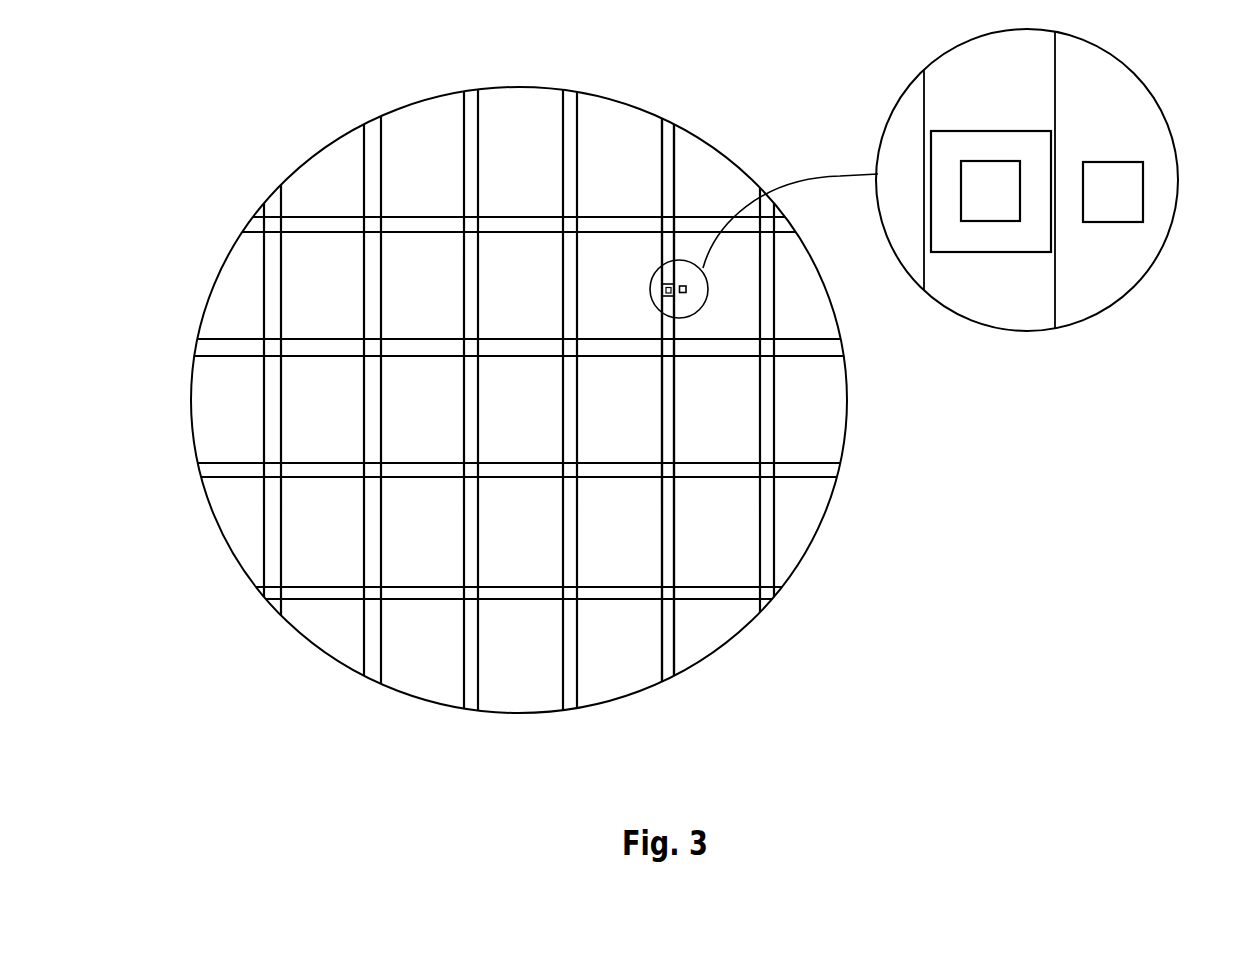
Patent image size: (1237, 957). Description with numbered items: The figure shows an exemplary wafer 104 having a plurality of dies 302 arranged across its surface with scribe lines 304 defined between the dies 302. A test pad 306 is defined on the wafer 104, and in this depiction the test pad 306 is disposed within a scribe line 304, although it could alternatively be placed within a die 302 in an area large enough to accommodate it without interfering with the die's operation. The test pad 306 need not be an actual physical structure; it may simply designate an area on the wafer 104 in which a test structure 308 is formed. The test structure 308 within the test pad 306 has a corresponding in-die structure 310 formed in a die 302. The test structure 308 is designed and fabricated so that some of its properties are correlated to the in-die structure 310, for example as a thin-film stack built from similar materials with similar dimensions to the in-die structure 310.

The wafer 104 is at (602, 216).
The dies 302 is at (526, 565).
The scribe lines 304 is at (674, 163).
The test pad 306 is at (980, 131).
The test structure 308 is at (980, 221).
The in-die structure 310 is at (1113, 162).